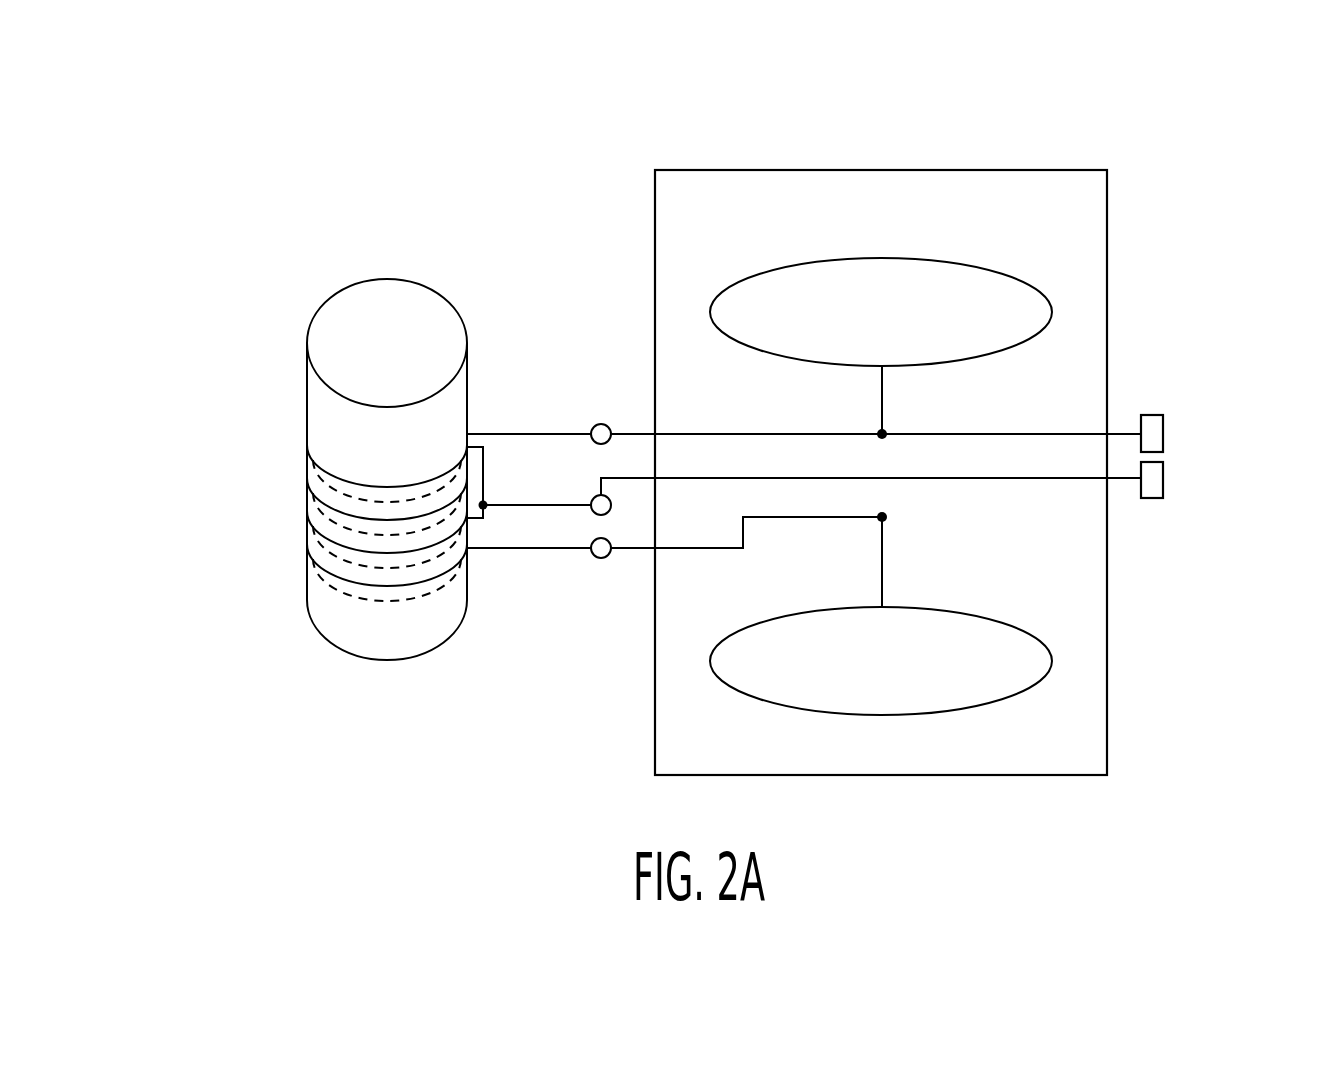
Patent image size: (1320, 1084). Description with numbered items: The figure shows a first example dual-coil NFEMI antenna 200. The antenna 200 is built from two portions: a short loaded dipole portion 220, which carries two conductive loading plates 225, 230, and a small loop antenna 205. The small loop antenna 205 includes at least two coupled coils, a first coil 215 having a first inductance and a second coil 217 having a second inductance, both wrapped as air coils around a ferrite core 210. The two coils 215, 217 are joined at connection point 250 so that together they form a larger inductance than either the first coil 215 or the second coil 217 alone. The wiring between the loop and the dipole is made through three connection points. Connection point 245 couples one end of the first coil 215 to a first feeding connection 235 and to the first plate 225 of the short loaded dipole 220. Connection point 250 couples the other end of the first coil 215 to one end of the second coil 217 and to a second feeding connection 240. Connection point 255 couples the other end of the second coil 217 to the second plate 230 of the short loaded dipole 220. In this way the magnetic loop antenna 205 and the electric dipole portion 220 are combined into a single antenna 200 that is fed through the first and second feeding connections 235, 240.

The dual-coil NFEMI antenna 200 is at (204, 190).
The small loop antenna 205 is at (363, 231).
The ferrite core 210 is at (325, 303).
The first coil 215 is at (337, 470).
The second coil 217 is at (328, 583).
The short loaded dipole portion 220 is at (703, 169).
The first conductive loading plate 225 is at (947, 261).
The second conductive loading plate 230 is at (949, 609).
The first feeding connection 235 is at (1164, 430).
The second feeding connection 240 is at (1164, 486).
The connection point 245 is at (601, 423).
The connection point 250 is at (611, 505).
The connection point 255 is at (601, 559).